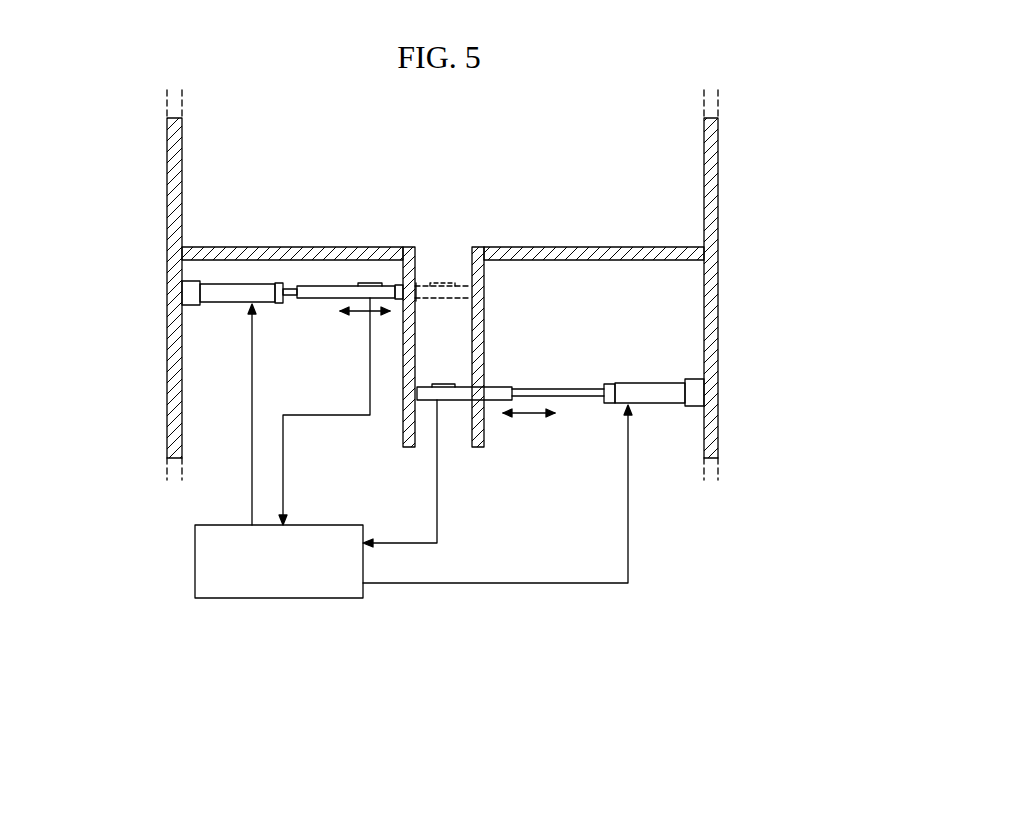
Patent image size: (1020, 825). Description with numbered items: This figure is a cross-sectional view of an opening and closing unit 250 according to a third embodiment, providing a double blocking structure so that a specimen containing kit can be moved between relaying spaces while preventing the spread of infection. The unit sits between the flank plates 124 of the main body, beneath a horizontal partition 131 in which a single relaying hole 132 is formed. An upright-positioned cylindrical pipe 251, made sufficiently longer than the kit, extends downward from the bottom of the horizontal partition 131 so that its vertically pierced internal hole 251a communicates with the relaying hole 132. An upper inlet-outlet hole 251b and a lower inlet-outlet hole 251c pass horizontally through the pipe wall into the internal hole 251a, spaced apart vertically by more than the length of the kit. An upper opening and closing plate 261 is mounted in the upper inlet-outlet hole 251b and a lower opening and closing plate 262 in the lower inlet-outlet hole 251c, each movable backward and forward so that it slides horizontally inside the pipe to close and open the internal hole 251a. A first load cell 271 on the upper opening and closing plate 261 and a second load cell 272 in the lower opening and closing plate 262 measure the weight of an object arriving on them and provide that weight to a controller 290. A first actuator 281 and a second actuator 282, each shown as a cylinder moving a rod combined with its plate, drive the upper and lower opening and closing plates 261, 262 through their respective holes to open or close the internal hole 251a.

The flank plate 124 is at (167, 330).
The horizontal partition 131 is at (631, 253).
The relaying hole 132 is at (441, 250).
The opening and closing unit 250 is at (435, 368).
The upright-positioned cylindrical pipe 251 is at (459, 335).
The internal hole 251a is at (428, 356).
The upper inlet-outlet hole 251b is at (405, 283).
The lower inlet-outlet hole 251c is at (486, 406).
The upper opening and closing plate 261 is at (368, 293).
The lower opening and closing plate 262 is at (510, 354).
The first load cell 271 is at (363, 284).
The second load cell 272 is at (443, 386).
The first actuator 281 is at (233, 302).
The second actuator 282 is at (649, 396).
The controller 290 is at (270, 599).